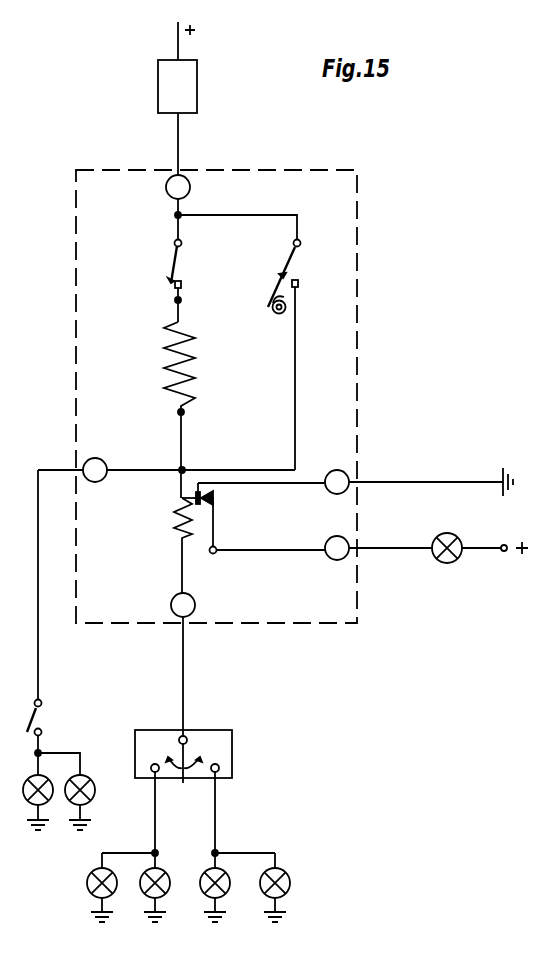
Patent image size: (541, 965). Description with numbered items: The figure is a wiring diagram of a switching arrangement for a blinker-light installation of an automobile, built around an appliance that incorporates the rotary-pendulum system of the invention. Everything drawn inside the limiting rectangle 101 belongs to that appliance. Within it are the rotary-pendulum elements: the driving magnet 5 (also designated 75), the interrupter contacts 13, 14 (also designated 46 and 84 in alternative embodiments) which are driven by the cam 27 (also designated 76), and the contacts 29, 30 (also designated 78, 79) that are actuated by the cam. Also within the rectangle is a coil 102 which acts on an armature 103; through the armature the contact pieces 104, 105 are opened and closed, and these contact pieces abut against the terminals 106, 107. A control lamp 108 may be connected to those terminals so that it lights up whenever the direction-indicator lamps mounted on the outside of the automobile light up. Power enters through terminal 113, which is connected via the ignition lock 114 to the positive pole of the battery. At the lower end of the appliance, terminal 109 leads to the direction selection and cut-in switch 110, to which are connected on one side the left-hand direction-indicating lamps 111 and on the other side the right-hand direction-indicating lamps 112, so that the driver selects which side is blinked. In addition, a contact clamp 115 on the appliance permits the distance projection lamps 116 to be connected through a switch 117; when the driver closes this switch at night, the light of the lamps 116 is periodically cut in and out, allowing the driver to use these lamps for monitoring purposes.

The ignition lock 114 is at (178, 92).
The terminal 113 is at (180, 185).
The limiting rectangle 101 is at (357, 342).
The interrupter contact 13 is at (138, 264).
The interrupter contact 46 is at (138, 264).
The interrupter contact 84 is at (170, 283).
The interrupter contact 14 is at (182, 243).
The contact 29 is at (272, 265).
The contact 78 is at (282, 277).
The contact 30 is at (317, 364).
The contact 79 is at (298, 281).
The cam 27 is at (267, 336).
The cam 76 is at (273, 310).
The driving magnet 5 is at (196, 373).
The driving magnet 75 is at (192, 370).
The contact clamp 115 is at (93, 477).
The contact piece 104 is at (178, 498).
The contact piece 105 is at (213, 502).
The coil 102 is at (172, 520).
The armature 103 is at (213, 535).
The terminal 106 is at (338, 480).
The terminal 107 is at (342, 553).
The control lamp 108 is at (445, 558).
The terminal 109 is at (180, 617).
The switch 117 is at (35, 719).
The distance projection lamps 116 is at (75, 802).
The direction selection and cut-in switch 110 is at (217, 753).
The left-hand direction-indicating lamps 111 is at (152, 889).
The right-hand direction-indicating lamps 112 is at (272, 890).